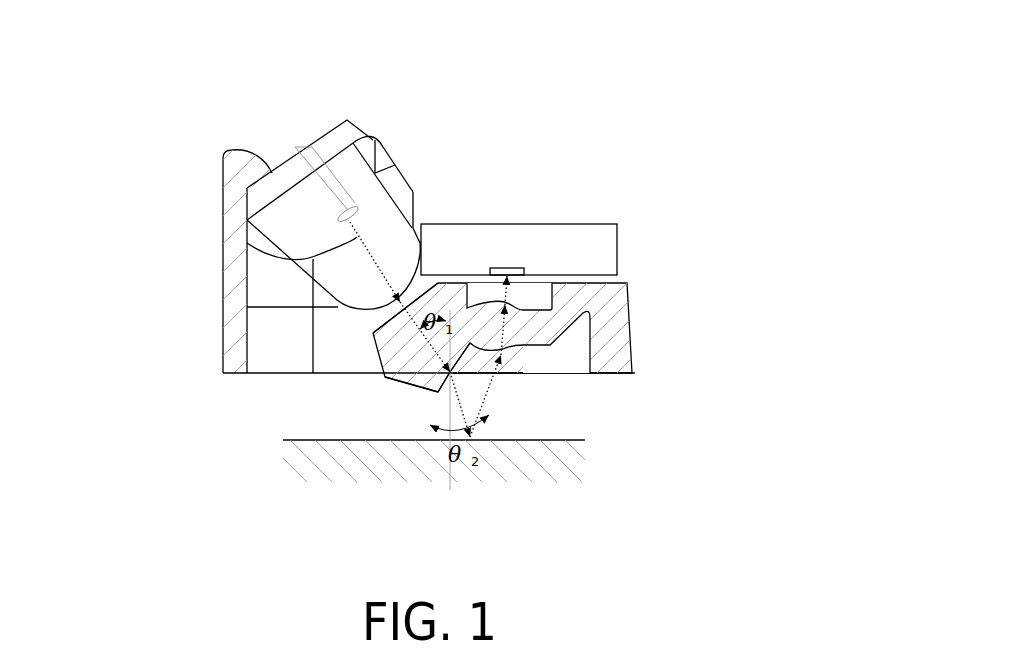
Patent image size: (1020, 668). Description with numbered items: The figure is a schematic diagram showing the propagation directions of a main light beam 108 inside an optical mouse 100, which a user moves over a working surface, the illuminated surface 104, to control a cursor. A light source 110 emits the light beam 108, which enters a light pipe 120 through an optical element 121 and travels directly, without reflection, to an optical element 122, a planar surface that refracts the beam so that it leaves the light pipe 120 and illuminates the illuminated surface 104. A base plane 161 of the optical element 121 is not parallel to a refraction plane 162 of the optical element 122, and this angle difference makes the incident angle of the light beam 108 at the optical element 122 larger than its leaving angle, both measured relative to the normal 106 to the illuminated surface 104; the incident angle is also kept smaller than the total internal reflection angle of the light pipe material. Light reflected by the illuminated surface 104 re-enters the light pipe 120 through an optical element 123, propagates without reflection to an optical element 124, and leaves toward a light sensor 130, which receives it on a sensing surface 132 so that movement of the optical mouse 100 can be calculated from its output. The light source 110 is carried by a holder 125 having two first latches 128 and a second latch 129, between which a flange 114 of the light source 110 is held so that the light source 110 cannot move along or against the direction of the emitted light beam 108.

The optical mouse 100 is at (618, 37).
The illuminated surface 104 is at (573, 440).
The normal 106 is at (450, 479).
The light beam 108 is at (310, 259).
The light source 110 is at (297, 202).
The flange 114 is at (328, 143).
The light pipe 120 is at (622, 330).
The optical element 121 is at (380, 310).
The optical element 122 is at (397, 388).
The optical element 123 is at (510, 350).
The optical element 124 is at (513, 305).
The holder 125 is at (278, 324).
The first latches 128 is at (393, 158).
The second latch 129 is at (242, 170).
The light sensor 130 is at (598, 222).
The sensing surface 132 is at (505, 268).
The base plane 161 is at (393, 320).
The refraction plane 162 is at (438, 392).